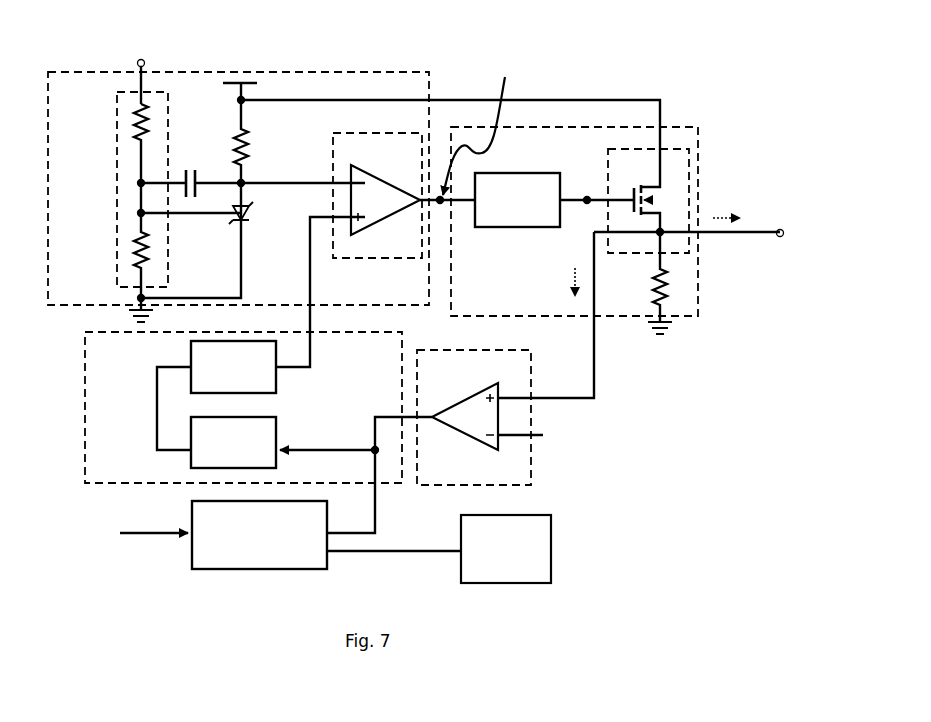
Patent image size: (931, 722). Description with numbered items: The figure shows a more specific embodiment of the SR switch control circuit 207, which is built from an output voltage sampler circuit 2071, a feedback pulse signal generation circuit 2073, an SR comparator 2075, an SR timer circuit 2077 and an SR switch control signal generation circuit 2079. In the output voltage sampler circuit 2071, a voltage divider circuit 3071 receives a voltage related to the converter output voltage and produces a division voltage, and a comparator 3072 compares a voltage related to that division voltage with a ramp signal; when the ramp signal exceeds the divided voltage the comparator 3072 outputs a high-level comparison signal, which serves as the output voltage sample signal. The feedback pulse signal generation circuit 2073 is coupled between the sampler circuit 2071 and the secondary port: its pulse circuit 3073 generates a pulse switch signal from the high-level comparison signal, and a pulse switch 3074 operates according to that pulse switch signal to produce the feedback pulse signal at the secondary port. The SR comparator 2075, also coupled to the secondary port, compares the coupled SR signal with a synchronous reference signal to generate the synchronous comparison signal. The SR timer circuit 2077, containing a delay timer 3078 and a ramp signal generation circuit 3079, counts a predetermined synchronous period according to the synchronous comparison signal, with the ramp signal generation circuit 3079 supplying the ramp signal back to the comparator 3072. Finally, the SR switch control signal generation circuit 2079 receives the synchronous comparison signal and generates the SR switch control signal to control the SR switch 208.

The SR switch control circuit 207 is at (778, 74).
The output voltage sampler circuit 2071 is at (420, 302).
The feedback pulse signal generation circuit 2073 is at (505, 316).
The SR comparator 2075 is at (469, 482).
The SR timer circuit 2077 is at (142, 477).
The SR switch control signal generation circuit 2079 is at (276, 545).
The SR switch 208 is at (522, 563).
The voltage divider circuit 3071 is at (115, 202).
The comparator 3072 is at (417, 255).
The pulse circuit 3073 is at (538, 213).
The pulse switch 3074 is at (655, 176).
The delay timer 3078 is at (254, 451).
The ramp signal generation circuit 3079 is at (254, 377).